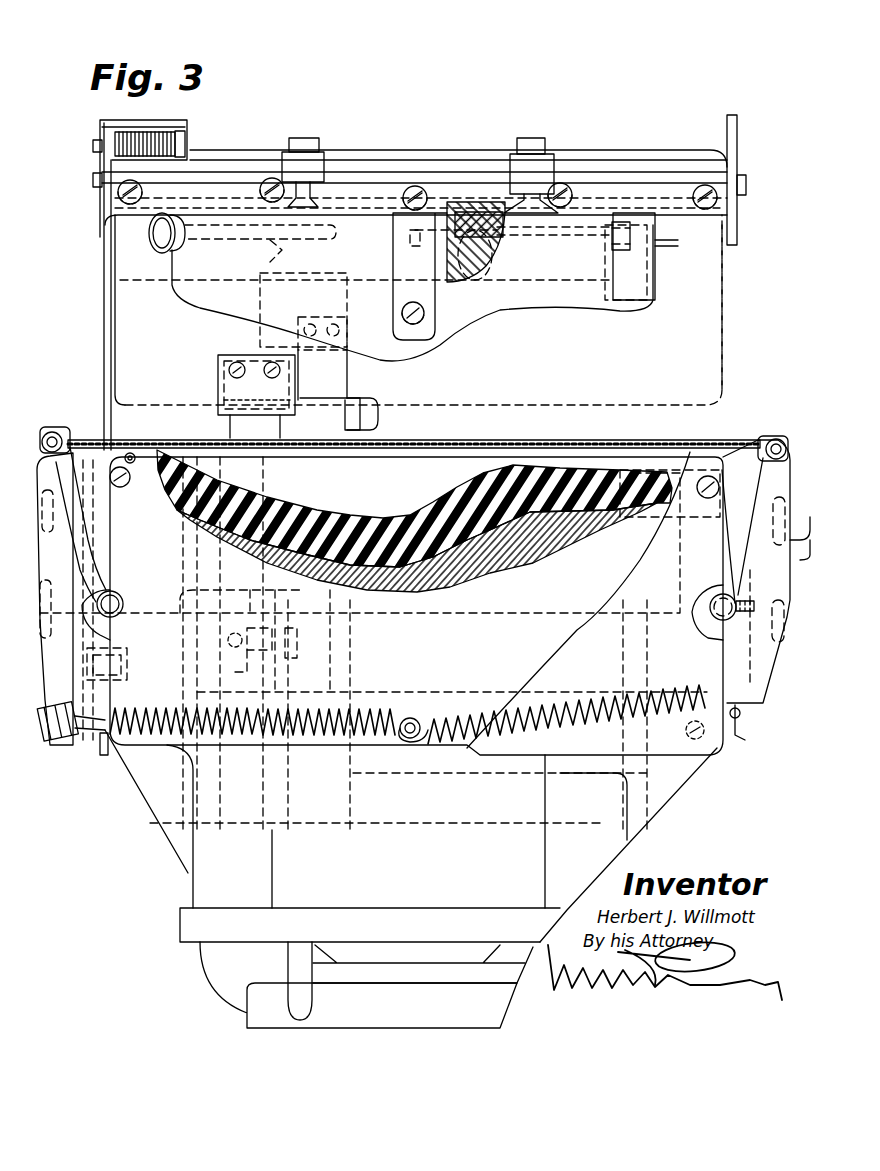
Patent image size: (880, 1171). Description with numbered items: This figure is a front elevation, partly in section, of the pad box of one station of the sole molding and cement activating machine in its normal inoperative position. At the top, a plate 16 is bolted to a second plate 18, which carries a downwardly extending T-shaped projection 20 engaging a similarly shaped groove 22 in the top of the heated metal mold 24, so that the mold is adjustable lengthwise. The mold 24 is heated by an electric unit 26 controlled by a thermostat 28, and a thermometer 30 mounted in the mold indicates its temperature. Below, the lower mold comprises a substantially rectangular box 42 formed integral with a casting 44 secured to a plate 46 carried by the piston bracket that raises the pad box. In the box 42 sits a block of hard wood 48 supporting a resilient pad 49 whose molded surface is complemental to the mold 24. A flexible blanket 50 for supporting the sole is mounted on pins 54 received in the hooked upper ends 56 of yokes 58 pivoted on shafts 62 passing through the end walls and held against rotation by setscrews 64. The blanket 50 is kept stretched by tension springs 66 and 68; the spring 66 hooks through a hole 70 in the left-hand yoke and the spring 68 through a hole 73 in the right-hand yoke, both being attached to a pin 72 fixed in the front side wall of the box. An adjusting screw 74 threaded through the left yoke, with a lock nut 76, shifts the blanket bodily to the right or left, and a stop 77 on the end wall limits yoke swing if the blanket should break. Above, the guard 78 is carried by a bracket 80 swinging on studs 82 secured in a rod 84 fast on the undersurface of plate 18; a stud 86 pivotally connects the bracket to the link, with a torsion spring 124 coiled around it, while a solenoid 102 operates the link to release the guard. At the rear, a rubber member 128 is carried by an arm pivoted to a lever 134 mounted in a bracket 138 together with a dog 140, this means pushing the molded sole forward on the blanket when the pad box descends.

The plate 16 is at (405, 165).
The second plate 18 is at (460, 197).
The T-shaped projection 20 is at (480, 210).
The groove 22 is at (482, 224).
The mold 24 is at (478, 315).
The electric unit 26 is at (568, 290).
The thermostat 28 is at (592, 225).
The thermometer 30 is at (158, 245).
The box 42 is at (730, 525).
The casting 44 is at (676, 808).
The plate 46 is at (438, 908).
The block of hard wood 48 is at (497, 572).
The resilient pad 49 is at (440, 515).
The flexible blanket 50 is at (606, 442).
The pins 54 is at (52, 432).
The hooked upper ends 56 is at (70, 440).
The yokes 58 is at (80, 537).
The shafts 62 is at (122, 600).
The setscrews 64 is at (745, 628).
The tension spring 66 is at (140, 740).
The tension spring 68 is at (445, 716).
The hole 70 is at (103, 755).
The pin 72 is at (410, 742).
The hole 73 is at (737, 715).
The adjusting screw 74 is at (42, 728).
The lock nut 76 is at (70, 740).
The stop 77 is at (790, 548).
The guard 78 is at (725, 345).
The bracket 80 is at (106, 125).
The studs 82 is at (747, 183).
The rod 84 is at (672, 206).
The stud 86 is at (183, 142).
The solenoid 102 is at (128, 655).
The torsion spring 124 is at (152, 134).
The member 128 is at (218, 386).
The lever 134 is at (272, 610).
The bracket 138 is at (197, 598).
The dog 140 is at (247, 664).